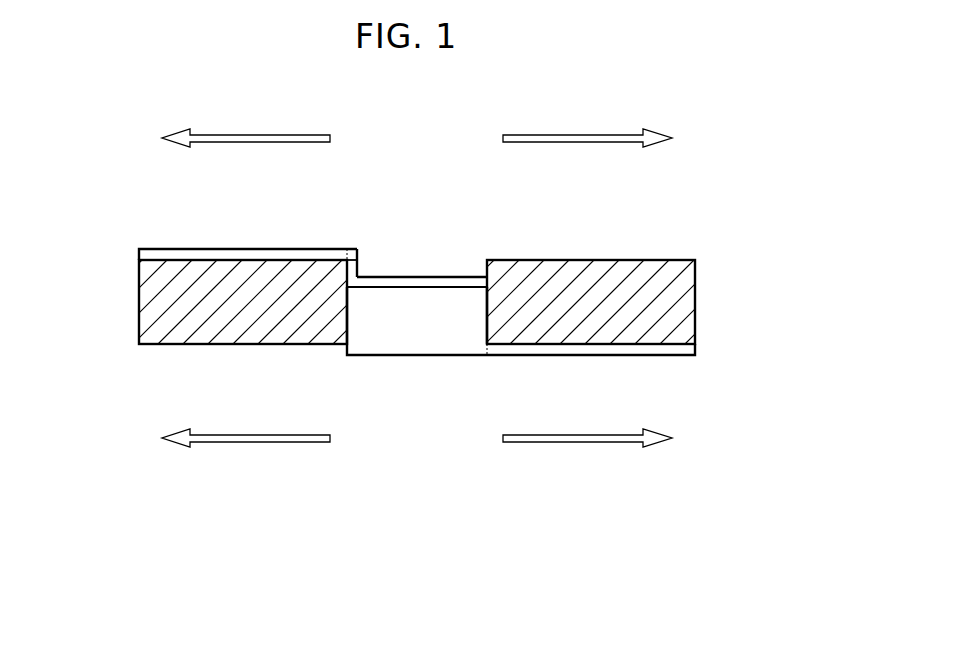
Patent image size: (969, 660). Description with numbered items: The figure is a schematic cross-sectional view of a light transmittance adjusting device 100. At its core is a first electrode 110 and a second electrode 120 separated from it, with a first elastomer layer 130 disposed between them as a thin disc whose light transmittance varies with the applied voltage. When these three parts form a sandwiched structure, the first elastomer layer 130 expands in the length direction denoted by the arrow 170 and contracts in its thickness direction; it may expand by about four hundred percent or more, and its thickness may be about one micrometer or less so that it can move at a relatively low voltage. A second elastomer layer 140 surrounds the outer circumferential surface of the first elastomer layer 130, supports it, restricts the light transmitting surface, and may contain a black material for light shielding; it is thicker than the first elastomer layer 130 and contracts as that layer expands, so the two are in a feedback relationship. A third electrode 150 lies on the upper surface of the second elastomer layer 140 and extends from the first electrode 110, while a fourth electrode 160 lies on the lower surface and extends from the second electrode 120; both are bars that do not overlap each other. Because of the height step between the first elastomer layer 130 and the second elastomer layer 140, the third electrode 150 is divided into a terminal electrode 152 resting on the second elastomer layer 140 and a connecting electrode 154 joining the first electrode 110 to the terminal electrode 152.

The light transmittance adjusting device 100 is at (139, 166).
The first electrode 110 is at (427, 276).
The second electrode 120 is at (412, 354).
The first elastomer layer 130 is at (464, 328).
The second elastomer layer 140 is at (148, 302).
The third electrode 150 is at (258, 215).
The terminal electrode 152 is at (258, 253).
The connecting electrode 154 is at (370, 268).
The fourth electrode 160 is at (592, 352).
The arrow 170 is at (417, 276).